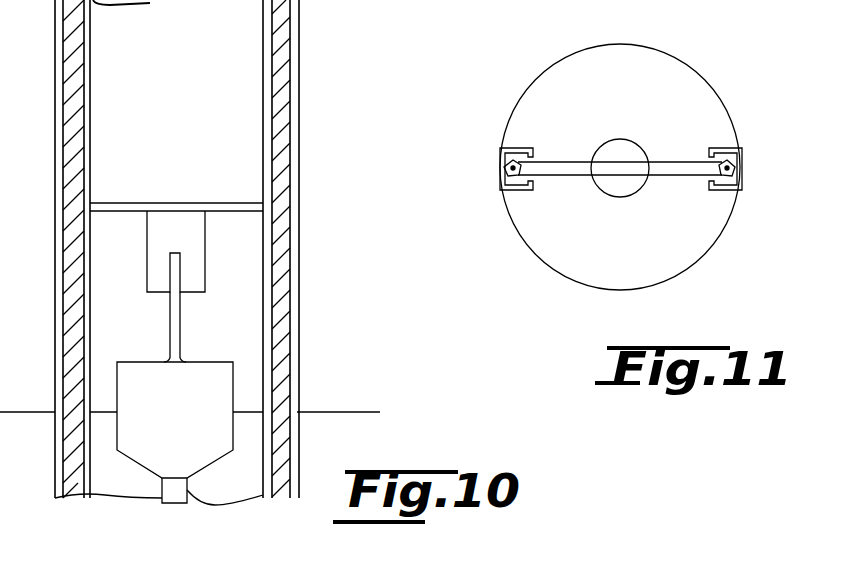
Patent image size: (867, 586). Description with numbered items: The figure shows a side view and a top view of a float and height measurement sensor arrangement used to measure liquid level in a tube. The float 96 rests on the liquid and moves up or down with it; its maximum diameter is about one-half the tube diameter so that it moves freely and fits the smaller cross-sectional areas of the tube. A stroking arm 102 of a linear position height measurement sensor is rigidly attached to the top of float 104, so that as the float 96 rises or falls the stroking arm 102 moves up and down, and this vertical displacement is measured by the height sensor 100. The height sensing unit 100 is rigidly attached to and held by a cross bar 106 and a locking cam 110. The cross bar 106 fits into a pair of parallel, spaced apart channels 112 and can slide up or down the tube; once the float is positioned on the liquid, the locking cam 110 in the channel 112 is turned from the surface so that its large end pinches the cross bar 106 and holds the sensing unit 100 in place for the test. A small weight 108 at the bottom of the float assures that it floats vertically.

In FIG. 10, the float 96 is at (186, 431).
In FIG. 10, the height sensor 100 is at (205, 260).
In FIG. 11, the height sensor 100 is at (637, 193).
In FIG. 10, the stroking arm 102 is at (180, 323).
In FIG. 10, the top of float 104 is at (186, 358).
In FIG. 10, the cross bar 106 is at (172, 203).
In FIG. 11, the cross bar 106 is at (676, 162).
In FIG. 10, the small weight 108 is at (190, 492).
In FIG. 11, the locking cam 110 is at (502, 159).
In FIG. 10, the channels 112 is at (283, 108).
In FIG. 11, the channels 112 is at (720, 145).